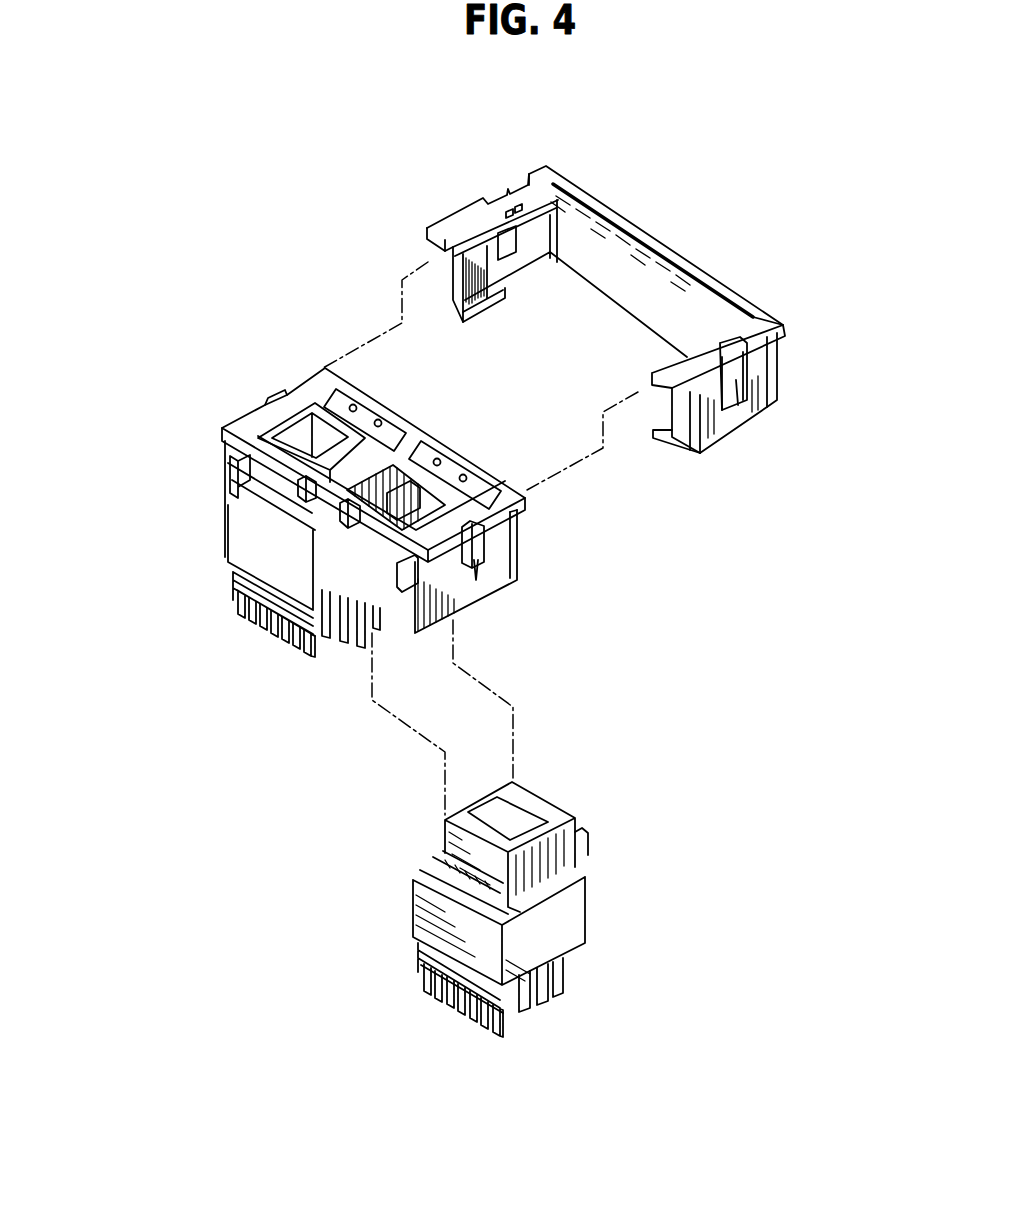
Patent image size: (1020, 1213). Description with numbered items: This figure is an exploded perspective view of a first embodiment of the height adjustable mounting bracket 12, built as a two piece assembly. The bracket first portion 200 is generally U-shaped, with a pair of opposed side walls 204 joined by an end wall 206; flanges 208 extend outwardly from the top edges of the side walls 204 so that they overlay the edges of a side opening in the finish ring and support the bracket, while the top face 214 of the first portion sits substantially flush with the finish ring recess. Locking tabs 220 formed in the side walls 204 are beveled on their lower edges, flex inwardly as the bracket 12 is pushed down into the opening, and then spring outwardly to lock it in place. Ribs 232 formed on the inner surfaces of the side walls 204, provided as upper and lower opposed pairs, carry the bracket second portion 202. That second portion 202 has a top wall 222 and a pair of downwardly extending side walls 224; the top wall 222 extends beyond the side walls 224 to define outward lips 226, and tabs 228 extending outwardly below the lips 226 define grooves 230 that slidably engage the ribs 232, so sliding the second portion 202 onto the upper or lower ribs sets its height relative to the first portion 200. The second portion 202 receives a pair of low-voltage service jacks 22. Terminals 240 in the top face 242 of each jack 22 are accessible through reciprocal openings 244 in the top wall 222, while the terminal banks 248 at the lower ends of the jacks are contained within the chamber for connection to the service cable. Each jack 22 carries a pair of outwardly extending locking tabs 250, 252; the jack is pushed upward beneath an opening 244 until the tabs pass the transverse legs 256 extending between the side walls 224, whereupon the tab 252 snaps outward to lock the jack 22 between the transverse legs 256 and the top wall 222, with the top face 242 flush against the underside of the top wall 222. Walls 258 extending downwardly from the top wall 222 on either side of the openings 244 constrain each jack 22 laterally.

The mounting bracket 12 is at (208, 657).
The low-voltage service jack 22 is at (233, 548).
The bracket first portion 200 is at (708, 277).
The bracket second portion 202 is at (303, 385).
The side walls 204 is at (457, 265).
The end wall 206 is at (640, 275).
The flanges 208 is at (452, 220).
The top face 214 is at (528, 175).
The locking tabs 220 is at (775, 360).
The top wall 222 is at (306, 372).
The side walls 224 is at (232, 458).
The flanges or lips 226 is at (520, 508).
The tabs 228 is at (474, 560).
The grooves 230 is at (484, 538).
The ribs 232 is at (556, 186).
The terminals 240 is at (272, 420).
The top face 242 is at (280, 418).
The openings 244 is at (398, 465).
The terminal banks 248 is at (365, 620).
The locking tab 250 is at (300, 462).
The locking tab 252 is at (584, 836).
The transverse legs 256 is at (232, 568).
The walls 258 is at (232, 478).